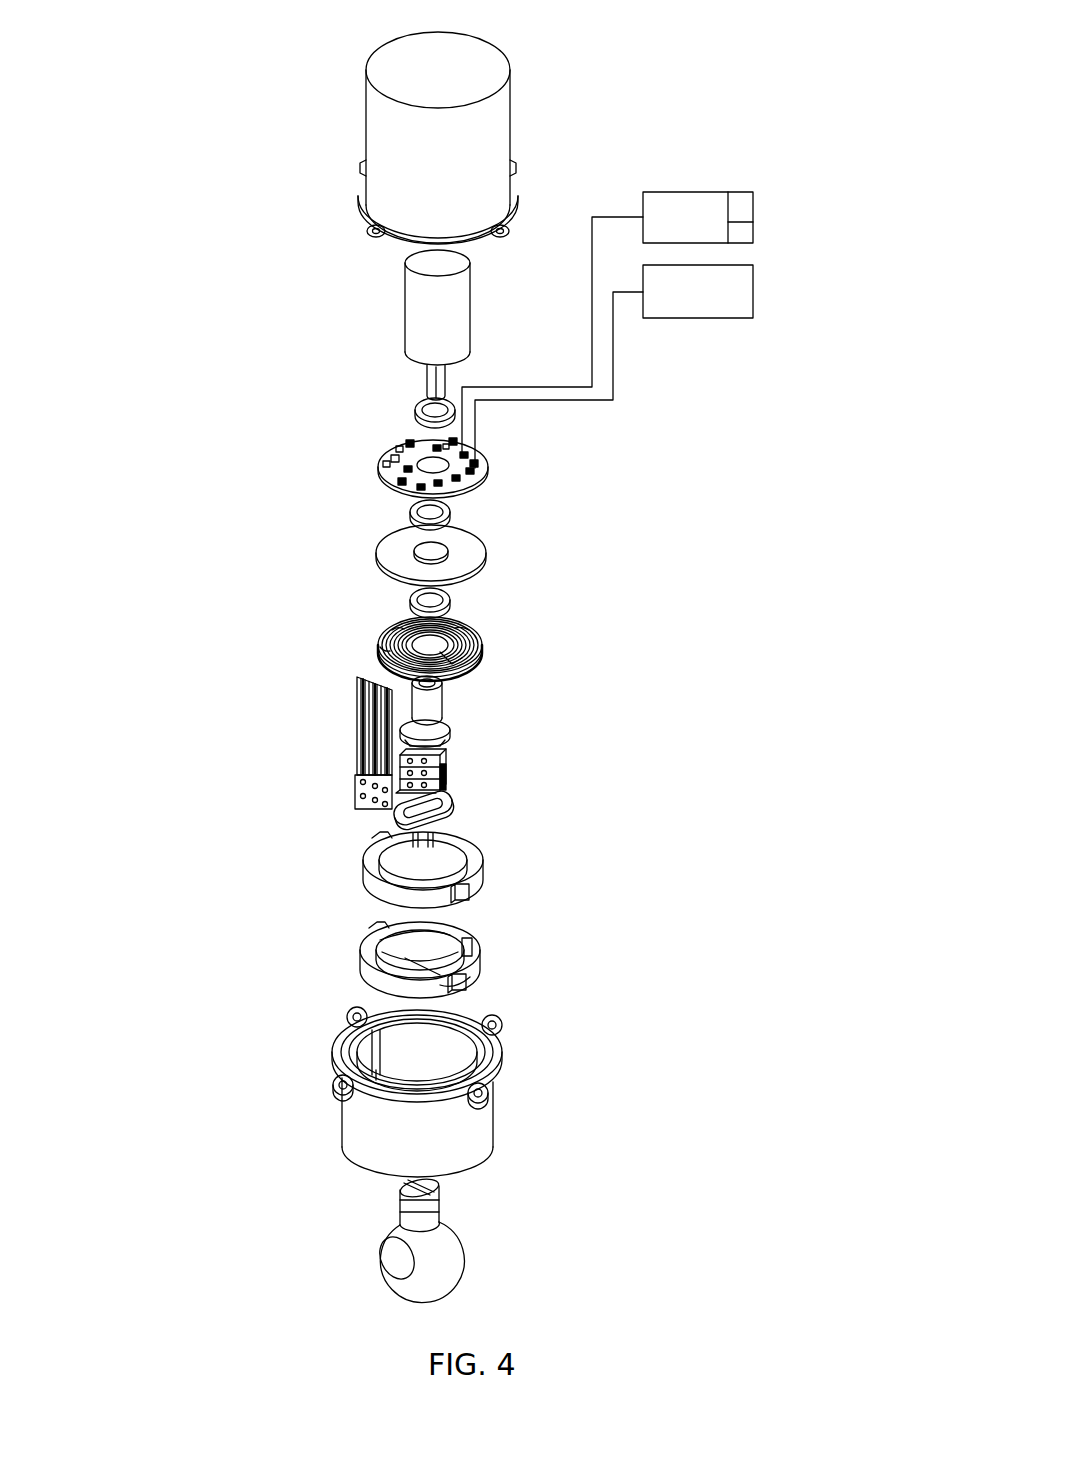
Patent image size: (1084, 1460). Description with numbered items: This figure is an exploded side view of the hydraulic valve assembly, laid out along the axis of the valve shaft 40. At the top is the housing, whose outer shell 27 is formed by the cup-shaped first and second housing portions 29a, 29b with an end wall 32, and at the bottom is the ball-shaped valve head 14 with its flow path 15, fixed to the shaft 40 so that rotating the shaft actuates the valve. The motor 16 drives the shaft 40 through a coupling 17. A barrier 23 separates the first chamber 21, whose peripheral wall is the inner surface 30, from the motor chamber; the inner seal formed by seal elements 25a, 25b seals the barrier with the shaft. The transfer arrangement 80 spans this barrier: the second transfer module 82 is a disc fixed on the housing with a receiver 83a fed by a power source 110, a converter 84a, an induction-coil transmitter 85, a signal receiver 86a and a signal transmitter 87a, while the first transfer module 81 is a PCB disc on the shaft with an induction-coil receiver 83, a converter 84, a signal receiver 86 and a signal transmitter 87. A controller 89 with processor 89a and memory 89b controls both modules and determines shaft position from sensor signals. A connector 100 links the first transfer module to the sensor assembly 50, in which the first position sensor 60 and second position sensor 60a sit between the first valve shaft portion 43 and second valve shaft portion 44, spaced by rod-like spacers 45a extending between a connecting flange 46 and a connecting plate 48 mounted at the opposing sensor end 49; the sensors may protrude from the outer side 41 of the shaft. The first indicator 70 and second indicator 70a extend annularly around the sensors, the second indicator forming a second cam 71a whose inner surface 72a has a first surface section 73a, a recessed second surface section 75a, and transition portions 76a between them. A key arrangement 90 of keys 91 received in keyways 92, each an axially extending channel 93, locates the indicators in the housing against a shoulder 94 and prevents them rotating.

The valve head 14 is at (419, 1263).
The flow path 15 is at (395, 1258).
The motor 16 is at (450, 322).
The coupling 17 is at (427, 387).
The first chamber 21 is at (440, 1052).
The barrier 23 is at (478, 548).
The first seal element 25a is at (410, 512).
The second seal element 25b is at (410, 600).
The outer shell 27 is at (484, 126).
The first housing portion 29a is at (405, 1078).
The second housing portion 29b is at (487, 158).
The inner surface 30 is at (497, 1023).
The end wall 32 is at (465, 60).
The valve shaft 40 is at (440, 1190).
The outer side 41 is at (395, 1212).
The first valve shaft portion 43 is at (445, 703).
The second valve shaft portion 44 is at (402, 1213).
The spacer 45a is at (447, 778).
The connecting flange 46 is at (445, 735).
The connecting plate 48 is at (450, 820).
The opposing sensor end 49 is at (398, 1186).
The sensor assembly 50 is at (286, 839).
The first position sensor 60 is at (480, 781).
The second position sensor 60a is at (440, 790).
The first indicator 70 is at (431, 877).
The second indicator 70a is at (396, 940).
The second cam 71a is at (400, 950).
The inner surface 72a is at (445, 965).
The first surface section 73a is at (378, 922).
The second surface section 75a is at (400, 950).
The transition portion 76a is at (470, 940).
The transfer arrangement 80 is at (308, 571).
The first transfer module 81 is at (433, 636).
The second transfer module 82 is at (431, 448).
The receiver 83 is at (465, 625).
The receiver 83a is at (488, 460).
The converter 84 is at (470, 658).
The converter 84a is at (392, 460).
The transmitter 85 is at (405, 480).
The signal receiver 86 is at (395, 632).
The signal receiver 86a is at (460, 450).
The signal transmitter 87 is at (380, 647).
The signal transmitter 87a is at (405, 440).
The controller 89 is at (746, 217).
The processor 89a is at (745, 208).
The memory 89b is at (745, 232).
The key arrangement 90 is at (270, 1030).
The key 91 is at (470, 975).
The keyway 92 is at (345, 1052).
The channel 93 is at (348, 1020).
The shoulder 94 is at (345, 1095).
The connector 100 is at (358, 730).
The power source 110 is at (698, 291).